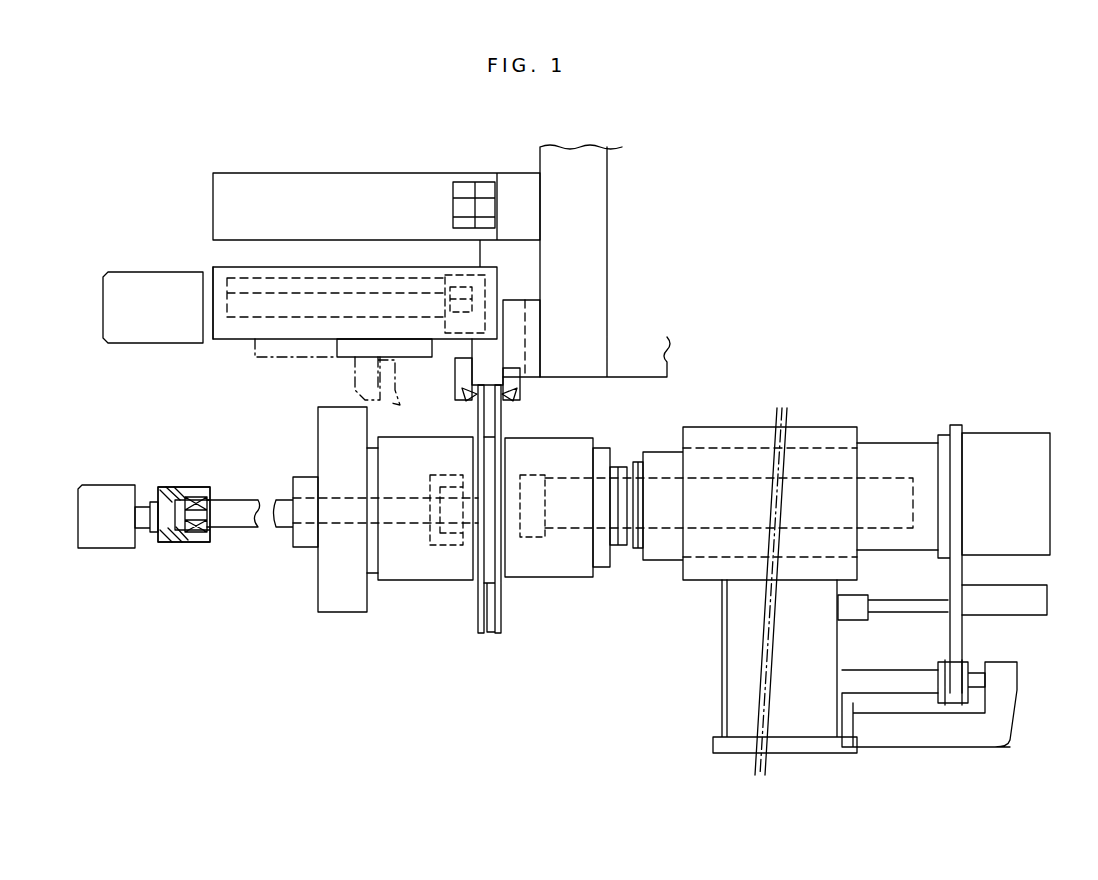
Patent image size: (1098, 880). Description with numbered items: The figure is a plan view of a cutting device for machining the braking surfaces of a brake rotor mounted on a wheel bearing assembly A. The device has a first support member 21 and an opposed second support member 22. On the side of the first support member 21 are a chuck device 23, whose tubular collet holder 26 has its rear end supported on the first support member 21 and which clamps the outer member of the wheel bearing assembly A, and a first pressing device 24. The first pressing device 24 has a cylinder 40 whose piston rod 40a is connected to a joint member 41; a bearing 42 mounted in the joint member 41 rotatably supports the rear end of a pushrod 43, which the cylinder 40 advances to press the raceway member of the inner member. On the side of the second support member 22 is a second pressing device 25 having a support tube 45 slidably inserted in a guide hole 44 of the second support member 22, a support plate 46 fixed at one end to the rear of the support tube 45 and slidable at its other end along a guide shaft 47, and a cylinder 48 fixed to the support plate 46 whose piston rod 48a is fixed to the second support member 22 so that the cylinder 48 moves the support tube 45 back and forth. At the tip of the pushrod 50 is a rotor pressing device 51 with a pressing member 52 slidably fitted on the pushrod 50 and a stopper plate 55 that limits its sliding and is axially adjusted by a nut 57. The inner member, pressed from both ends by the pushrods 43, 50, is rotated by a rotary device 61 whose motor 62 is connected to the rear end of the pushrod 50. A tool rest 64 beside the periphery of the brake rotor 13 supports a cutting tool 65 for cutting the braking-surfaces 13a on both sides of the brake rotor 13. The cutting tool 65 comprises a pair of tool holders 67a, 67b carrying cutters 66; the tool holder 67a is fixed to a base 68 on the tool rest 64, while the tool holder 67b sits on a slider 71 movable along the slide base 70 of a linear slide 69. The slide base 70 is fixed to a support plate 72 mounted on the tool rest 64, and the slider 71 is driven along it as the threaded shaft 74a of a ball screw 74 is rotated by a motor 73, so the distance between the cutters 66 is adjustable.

The brake rotor 13 is at (483, 635).
The braking-surfaces 13a is at (505, 614).
The first support member 21 is at (325, 614).
The second support member 22 is at (746, 430).
The chuck device 23 is at (395, 583).
The first pressing device 24 is at (165, 478).
The second pressing device 25 is at (897, 430).
The collet holder 26 is at (408, 572).
The cylinder 40 is at (103, 546).
The piston rod 40a is at (143, 530).
The joint member 41 is at (180, 543).
The bearing 42 is at (205, 542).
The pushrod 43 is at (282, 522).
The guide hole 44 is at (840, 448).
The support tube 45 is at (803, 447).
The support plate 46 is at (960, 692).
The guide shaft 47 is at (905, 680).
The cylinder 48 is at (1030, 608).
The piston rod 48a is at (893, 605).
The pushrod 50 is at (708, 482).
The rotor pressing device 51 is at (577, 582).
The pressing member 52 is at (602, 578).
The stopper plate 55 is at (613, 468).
The nut 57 is at (636, 462).
The rotary device 61 is at (975, 432).
The motor 62 is at (1018, 432).
The tool rest 64 is at (548, 162).
The cutting tool 65 is at (528, 396).
The cutters 66 is at (503, 398).
The tool holder 67a is at (520, 348).
The tool holder 67b is at (460, 370).
The base 68 is at (537, 317).
The linear slide 69 is at (220, 345).
The slide base 70 is at (258, 325).
The slider 71 is at (348, 350).
The support plate 72 is at (418, 182).
The motor 73 is at (155, 270).
The ball screw 74 is at (288, 296).
The threaded shaft 74a is at (333, 296).
The wheel bearing assembly A is at (478, 592).